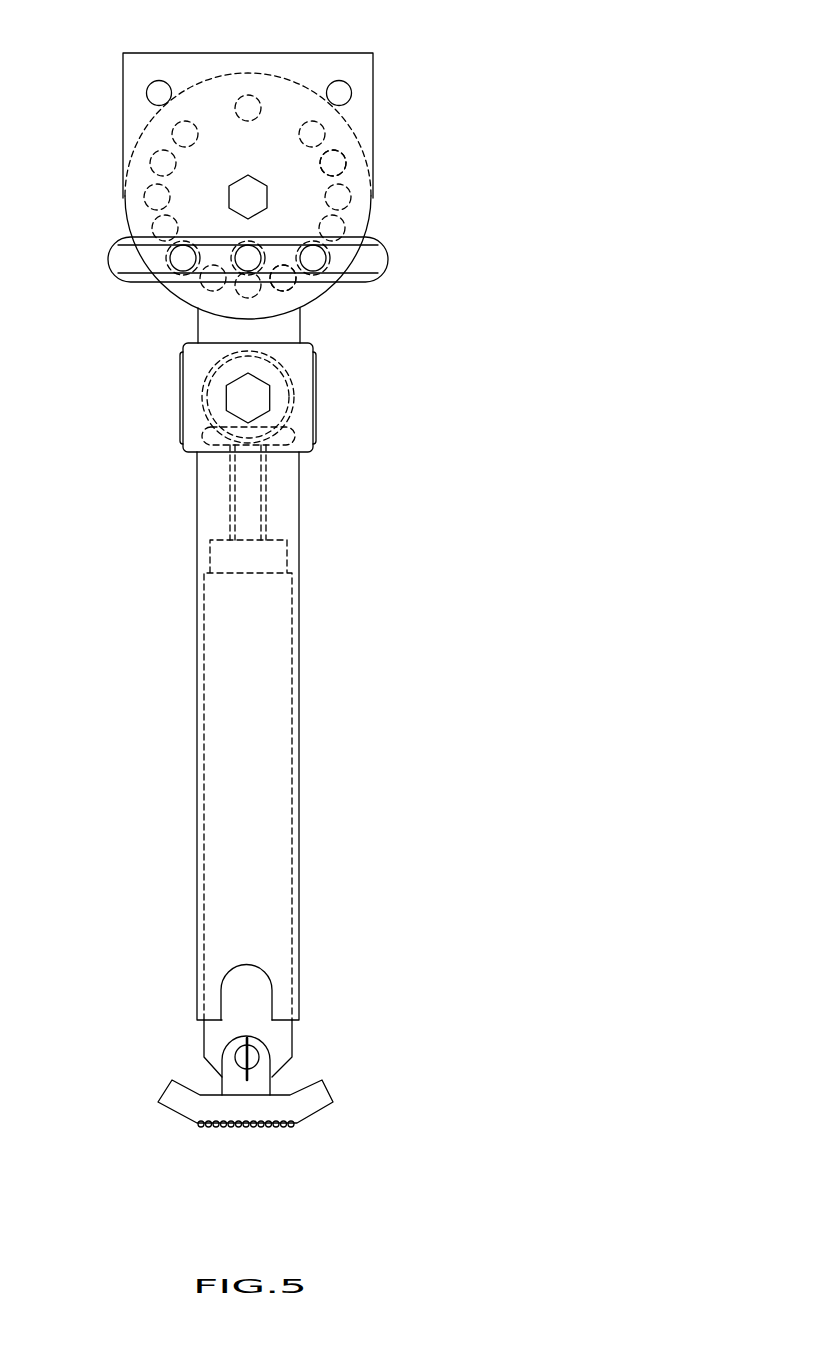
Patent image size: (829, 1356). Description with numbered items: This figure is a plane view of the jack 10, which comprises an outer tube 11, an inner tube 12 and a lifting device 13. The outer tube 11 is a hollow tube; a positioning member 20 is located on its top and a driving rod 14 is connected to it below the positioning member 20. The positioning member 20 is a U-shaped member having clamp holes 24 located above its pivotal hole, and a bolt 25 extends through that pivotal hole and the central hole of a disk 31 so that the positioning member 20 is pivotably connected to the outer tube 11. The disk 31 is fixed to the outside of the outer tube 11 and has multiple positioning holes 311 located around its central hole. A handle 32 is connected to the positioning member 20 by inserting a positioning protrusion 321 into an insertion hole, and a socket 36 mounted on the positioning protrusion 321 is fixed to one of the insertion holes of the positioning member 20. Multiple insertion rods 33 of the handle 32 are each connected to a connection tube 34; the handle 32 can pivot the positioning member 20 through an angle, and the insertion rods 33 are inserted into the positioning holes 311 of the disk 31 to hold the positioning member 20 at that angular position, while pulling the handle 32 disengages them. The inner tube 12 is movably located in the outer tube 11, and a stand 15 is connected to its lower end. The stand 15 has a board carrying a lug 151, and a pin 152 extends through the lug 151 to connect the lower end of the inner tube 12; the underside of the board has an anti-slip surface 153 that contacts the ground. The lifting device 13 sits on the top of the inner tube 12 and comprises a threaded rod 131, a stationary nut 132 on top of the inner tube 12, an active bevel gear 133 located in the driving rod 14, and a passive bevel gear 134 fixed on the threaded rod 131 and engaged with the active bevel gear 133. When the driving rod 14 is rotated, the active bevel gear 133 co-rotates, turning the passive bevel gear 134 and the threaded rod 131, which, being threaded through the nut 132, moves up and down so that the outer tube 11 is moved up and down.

The jack 10 is at (137, 627).
The outer tube 11 is at (199, 520).
The inner tube 12 is at (204, 1033).
The lifting device 13 is at (293, 732).
The threaded rod 131 is at (263, 478).
The nut 132 is at (275, 558).
The active bevel gear 133 is at (302, 397).
The passive bevel gear 134 is at (293, 435).
The driving rod 14 is at (233, 398).
The stand 15 is at (246, 1120).
The lug 151 is at (265, 1087).
The pin 152 is at (260, 1055).
The anti-slip surface 153 is at (200, 1123).
The positioning member 20 is at (372, 68).
The clamp hole 24 is at (351, 95).
The bolt 25 is at (245, 187).
The disk 31 is at (345, 124).
The positioning holes 311 is at (345, 160).
The handle 32 is at (386, 257).
The positioning protrusion 321 is at (283, 282).
The insertion rods 33 is at (183, 262).
The connection tube 34 is at (175, 259).
The socket 36 is at (262, 268).